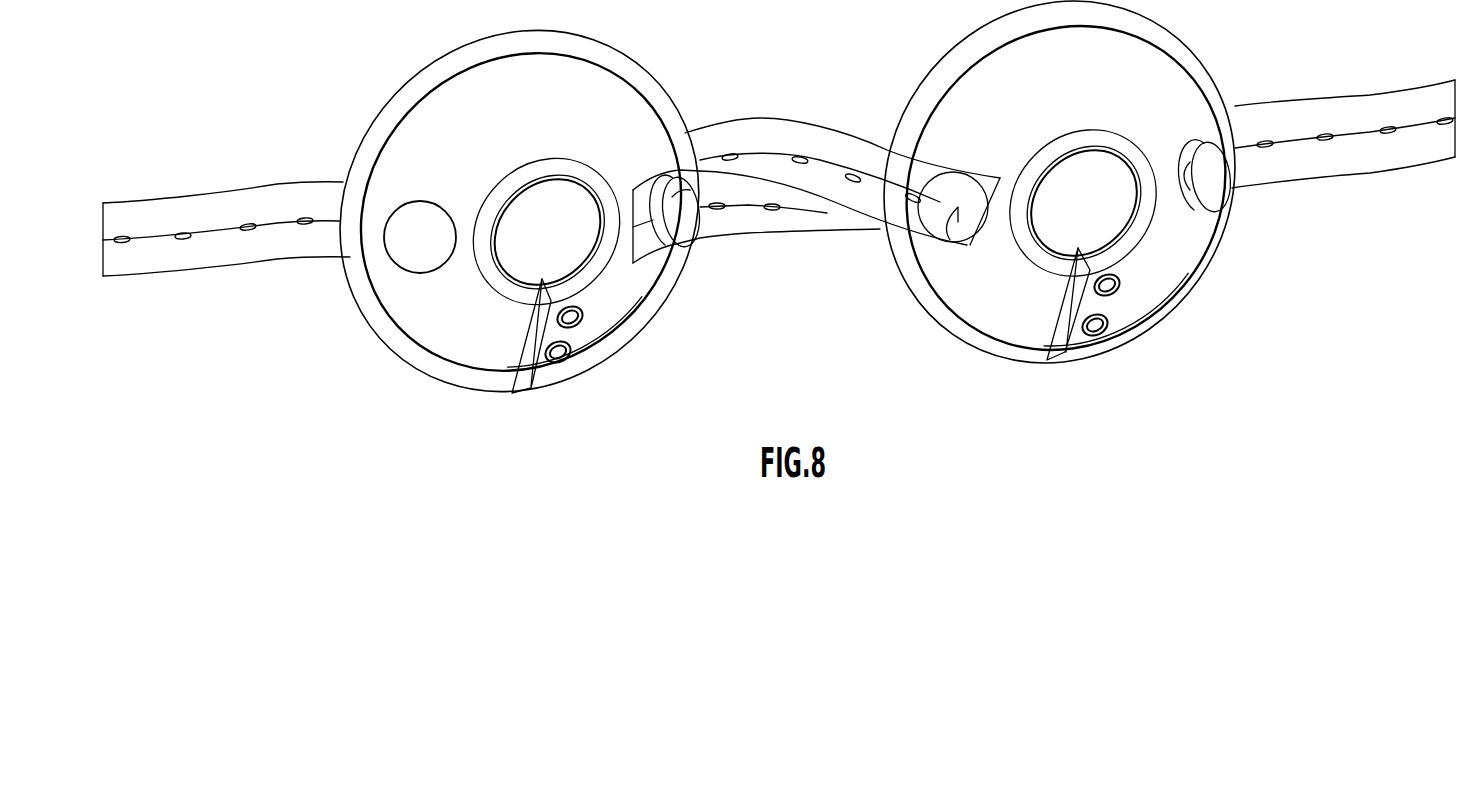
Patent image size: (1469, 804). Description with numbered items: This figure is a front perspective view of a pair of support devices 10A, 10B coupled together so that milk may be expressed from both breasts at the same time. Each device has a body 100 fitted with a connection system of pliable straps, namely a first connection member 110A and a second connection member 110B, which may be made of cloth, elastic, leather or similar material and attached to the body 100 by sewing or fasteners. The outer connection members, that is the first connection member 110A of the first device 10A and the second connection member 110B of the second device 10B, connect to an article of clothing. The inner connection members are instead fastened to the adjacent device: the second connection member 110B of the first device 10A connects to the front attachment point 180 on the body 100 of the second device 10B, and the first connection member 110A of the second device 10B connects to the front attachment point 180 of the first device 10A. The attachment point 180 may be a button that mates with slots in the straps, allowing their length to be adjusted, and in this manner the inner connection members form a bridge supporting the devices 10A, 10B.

The first support device 10A is at (512, 432).
The second support device 10B is at (1083, 402).
The body 100 is at (364, 330).
The first connection member 110A is at (193, 217).
The second connection member 110B is at (797, 137).
The second attachment point 180 is at (710, 170).